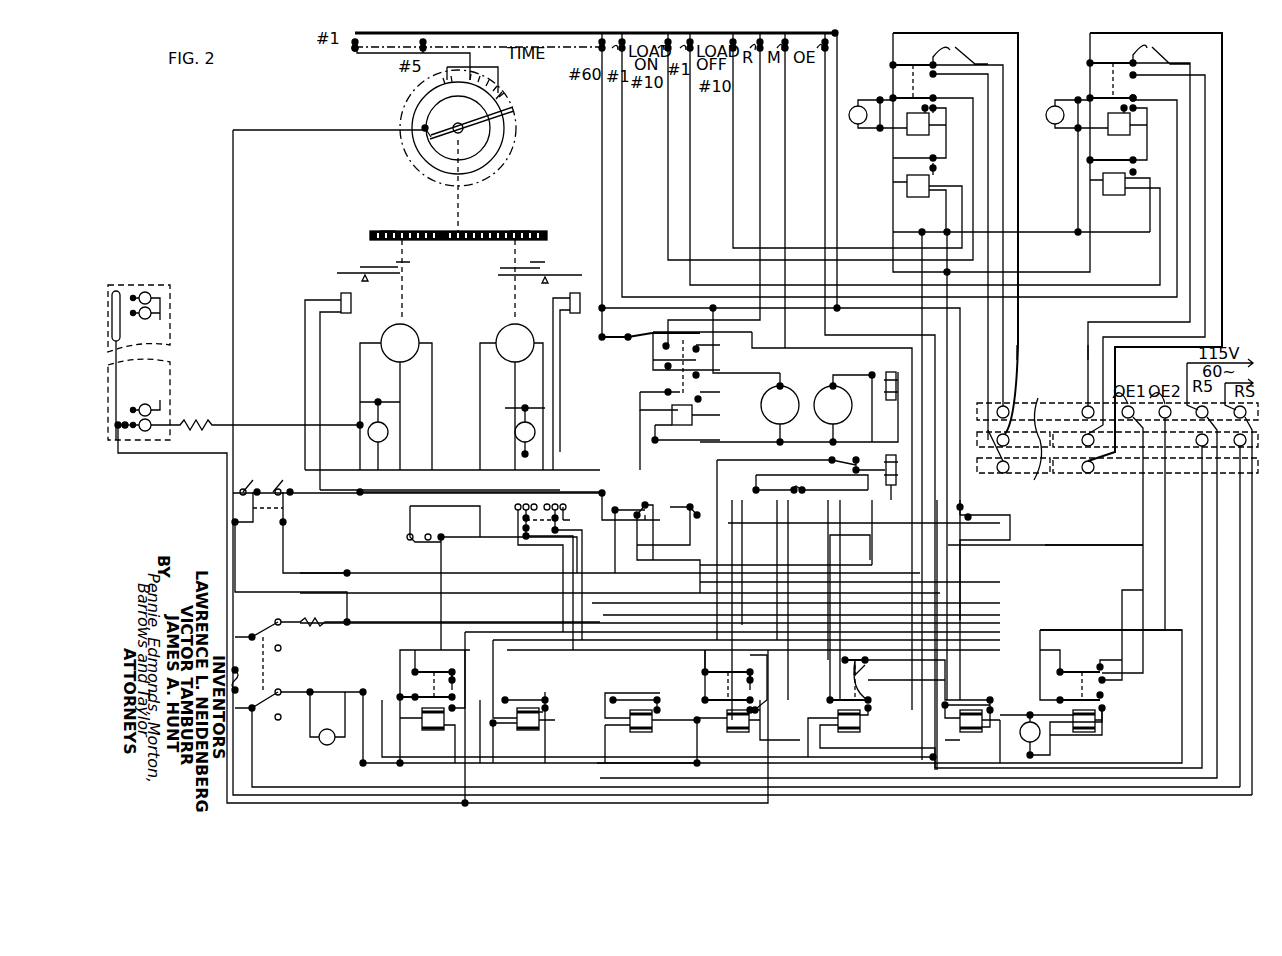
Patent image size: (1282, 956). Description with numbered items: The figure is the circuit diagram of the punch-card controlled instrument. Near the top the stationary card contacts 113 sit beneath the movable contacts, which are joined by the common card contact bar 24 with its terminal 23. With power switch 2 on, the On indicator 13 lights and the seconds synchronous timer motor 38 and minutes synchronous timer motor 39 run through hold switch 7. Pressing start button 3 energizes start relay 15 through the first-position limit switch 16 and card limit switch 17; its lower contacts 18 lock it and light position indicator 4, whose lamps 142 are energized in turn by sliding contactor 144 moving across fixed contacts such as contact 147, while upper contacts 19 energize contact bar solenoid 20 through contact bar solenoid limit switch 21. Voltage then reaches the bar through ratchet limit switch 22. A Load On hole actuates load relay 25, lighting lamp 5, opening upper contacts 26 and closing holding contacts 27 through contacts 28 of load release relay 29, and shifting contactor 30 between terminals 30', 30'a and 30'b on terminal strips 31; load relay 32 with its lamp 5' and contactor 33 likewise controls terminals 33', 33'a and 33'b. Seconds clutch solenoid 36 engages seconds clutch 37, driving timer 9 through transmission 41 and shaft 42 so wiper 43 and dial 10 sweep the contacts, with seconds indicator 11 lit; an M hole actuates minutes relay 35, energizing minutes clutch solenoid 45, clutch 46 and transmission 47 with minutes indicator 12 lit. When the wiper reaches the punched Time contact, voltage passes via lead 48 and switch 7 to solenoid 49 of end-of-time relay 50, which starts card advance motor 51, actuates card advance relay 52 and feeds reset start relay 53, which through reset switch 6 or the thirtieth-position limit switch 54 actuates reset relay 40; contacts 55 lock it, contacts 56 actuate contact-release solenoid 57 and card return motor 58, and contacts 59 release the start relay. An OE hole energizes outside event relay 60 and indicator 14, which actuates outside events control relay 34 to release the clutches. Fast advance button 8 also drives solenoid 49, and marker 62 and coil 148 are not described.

The power switch 2 is at (265, 668).
The start button 3 is at (415, 538).
The position indicator 4 is at (172, 310).
The indicating lamp 5 is at (1069, 153).
The indicating lamp 5' is at (873, 101).
The reset switch 6 is at (573, 517).
The hold switch 7 is at (260, 510).
The fast advance button 8 is at (852, 672).
The timer 9 is at (405, 198).
The dial 10 is at (500, 133).
The seconds indicator 11 is at (537, 425).
The minutes indicator 12 is at (390, 428).
The on indicator 13 is at (327, 745).
The outside events indicator 14 is at (1025, 727).
The start relay 15 is at (428, 730).
The position #1 limit switch 16 is at (628, 510).
The limit switch 17 is at (676, 505).
The lower contacts 18 is at (455, 702).
The upper contacts 19 is at (455, 665).
The contact bar solenoid 20 is at (890, 486).
The contact bar solenoid limit switch 21 is at (838, 463).
The ratchet limit switch 22 is at (968, 503).
The terminal 23 is at (837, 33).
The card contact bar 24 is at (360, 33).
The load relay 25 is at (1108, 130).
The upper contacts 26 is at (1133, 96).
The lower contacts 27 is at (1135, 110).
The contacts 28 is at (1133, 160).
The load release relay 29 is at (1112, 193).
The relay contactor 30 is at (1154, 245).
The external load circuit terminal 30' is at (1073, 423).
The external load circuit terminal 30'a is at (1069, 375).
The external load circuit terminal 30'b is at (1085, 467).
The terminal strips 31 is at (1034, 470).
The load relay 32 is at (912, 135).
The relay contactor 33 is at (954, 245).
The external load circuit terminal 33' is at (986, 429).
The external load circuit terminal 33'a is at (1034, 364).
The external load circuit terminal 33'b is at (982, 462).
The outside events control relay 34 is at (865, 715).
The minutes relay 35 is at (978, 725).
The seconds clutch solenoid 36 is at (579, 313).
The seconds timer clutch 37 is at (536, 262).
The seconds synchronous timer motor 38 is at (512, 362).
The minutes synchronous timer motor 39 is at (400, 362).
The reset relay 40 is at (745, 725).
The transmission 41 is at (519, 231).
The shaft 42 is at (460, 215).
The wiper 43 is at (432, 142).
The minutes clutch solenoid 45 is at (350, 312).
The minutes clutch 46 is at (378, 262).
The transmission 47 is at (388, 231).
The lead 48 is at (233, 198).
The solenoid 49 is at (698, 416).
The end-of-time relay 50 is at (668, 379).
The card advance motor 51 is at (780, 384).
The card advance relay 52 is at (540, 725).
The reset start relay 53 is at (655, 725).
The position #30 limit switch 54 is at (628, 337).
The contacts 55 is at (770, 705).
The contacts 56 is at (755, 705).
The contact-release solenoid 57 is at (890, 402).
The card return motor 58 is at (843, 384).
The upper contacts 59 is at (750, 672).
The outside event relay 60 is at (1105, 708).
The dial marker 62 is at (500, 97).
The stationary contacts 113 is at (352, 50).
The indicator lamps 142 is at (145, 292).
The sliding contactor 144 is at (118, 440).
The fixed contact 147 is at (132, 428).
The relay coil 148 is at (910, 197).